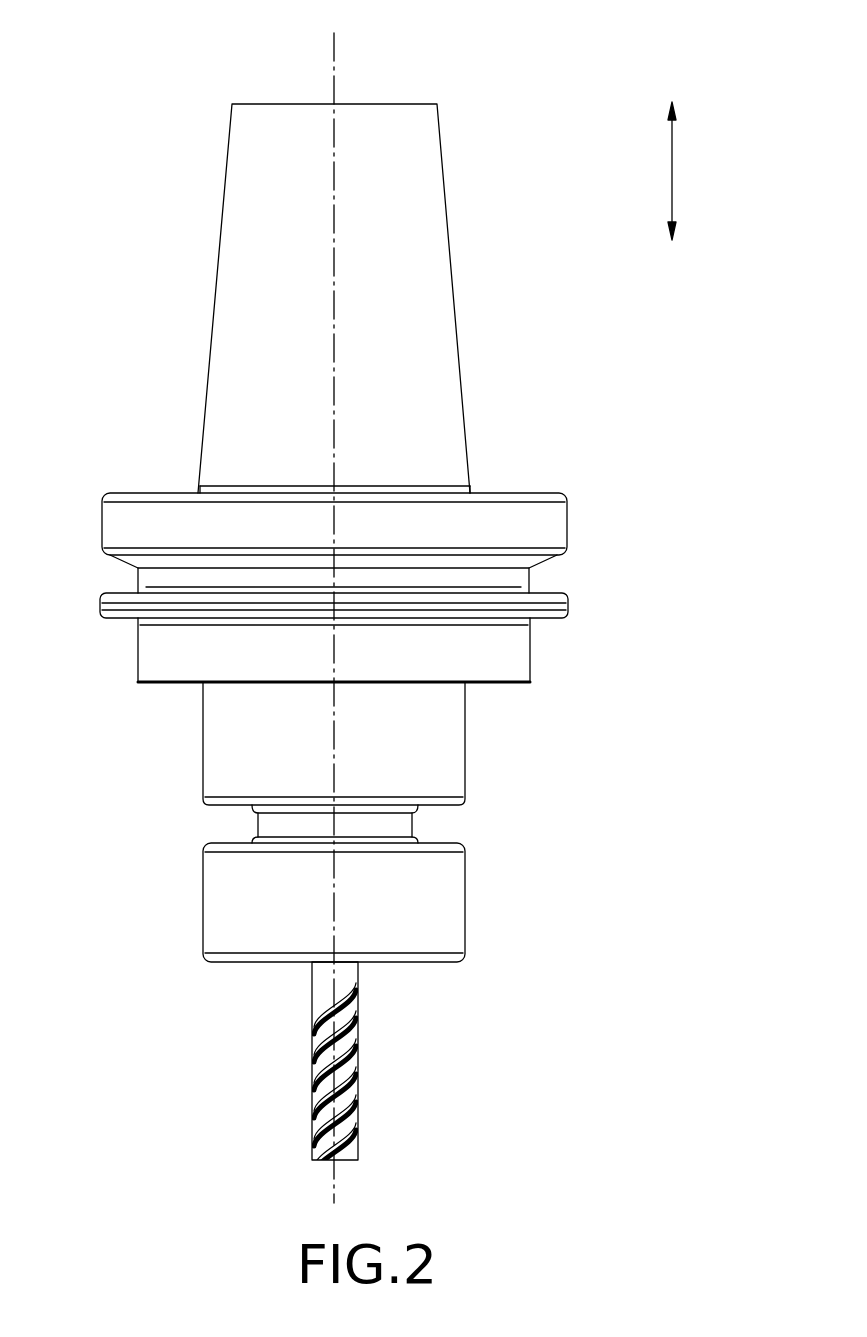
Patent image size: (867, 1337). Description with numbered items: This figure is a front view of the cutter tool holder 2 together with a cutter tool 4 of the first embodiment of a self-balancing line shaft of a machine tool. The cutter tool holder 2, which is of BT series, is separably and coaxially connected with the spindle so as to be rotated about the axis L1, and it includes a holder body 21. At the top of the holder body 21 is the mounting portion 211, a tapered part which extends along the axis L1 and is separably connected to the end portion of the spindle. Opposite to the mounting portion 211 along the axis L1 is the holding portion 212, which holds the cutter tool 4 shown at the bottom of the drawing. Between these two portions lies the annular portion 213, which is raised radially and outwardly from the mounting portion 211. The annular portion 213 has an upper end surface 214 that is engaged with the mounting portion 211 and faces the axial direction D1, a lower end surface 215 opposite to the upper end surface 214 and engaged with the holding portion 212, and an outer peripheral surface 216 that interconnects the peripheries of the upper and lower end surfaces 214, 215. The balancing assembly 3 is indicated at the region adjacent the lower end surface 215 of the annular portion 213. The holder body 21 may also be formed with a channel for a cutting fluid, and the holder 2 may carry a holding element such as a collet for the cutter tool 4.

The cutter tool holder 2 is at (411, 533).
The holder body 21 is at (411, 533).
The mounting portion 211 is at (450, 235).
The holding portion 212 is at (203, 753).
The annular portion 213 is at (434, 517).
The upper end surface 214 is at (510, 492).
The lower end surface 215 is at (477, 685).
The outer peripheral surface 216 is at (568, 523).
The balancing assembly 3 is at (527, 701).
The cutter tool 4 is at (376, 1099).
The axis L1 is at (341, 603).
The axial direction D1 is at (672, 155).